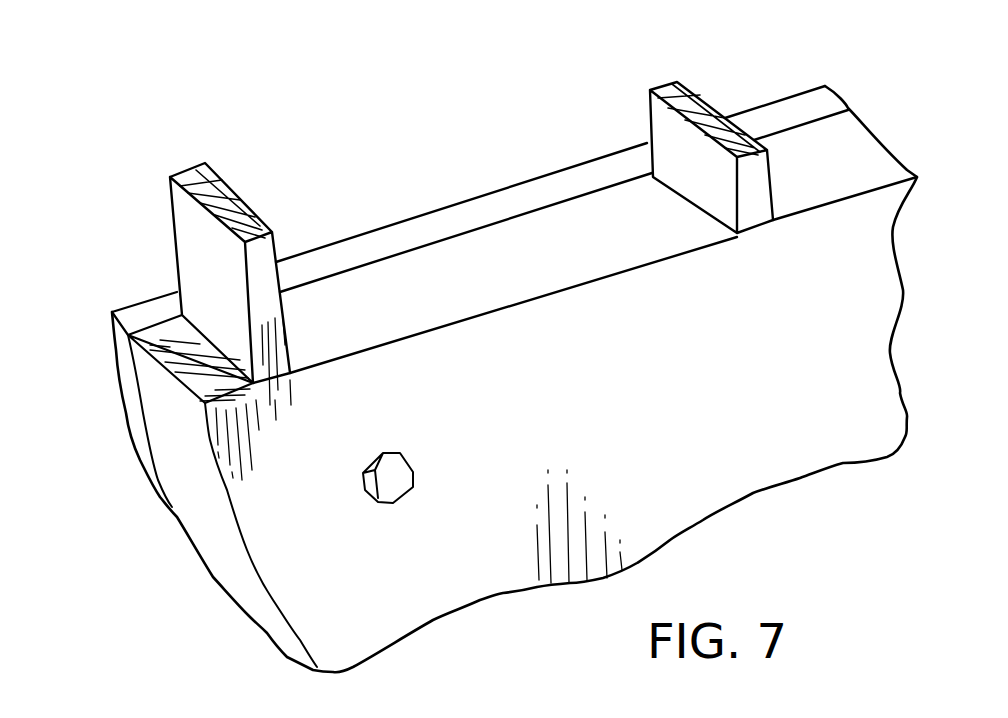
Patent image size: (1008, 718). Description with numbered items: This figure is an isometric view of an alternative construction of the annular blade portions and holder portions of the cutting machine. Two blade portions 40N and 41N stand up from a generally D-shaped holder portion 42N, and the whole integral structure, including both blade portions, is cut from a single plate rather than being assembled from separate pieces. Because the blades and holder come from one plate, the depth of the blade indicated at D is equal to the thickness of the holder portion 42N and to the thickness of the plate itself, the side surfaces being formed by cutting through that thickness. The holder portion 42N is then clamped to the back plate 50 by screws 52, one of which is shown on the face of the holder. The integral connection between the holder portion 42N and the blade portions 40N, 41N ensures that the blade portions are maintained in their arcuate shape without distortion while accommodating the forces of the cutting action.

The blade portion 40N is at (199, 163).
The blade portion 41N is at (695, 96).
The holder portion 42N is at (551, 240).
The back plate 50 is at (385, 230).
The screws 52 is at (403, 479).
The depth of the blade D is at (240, 296).